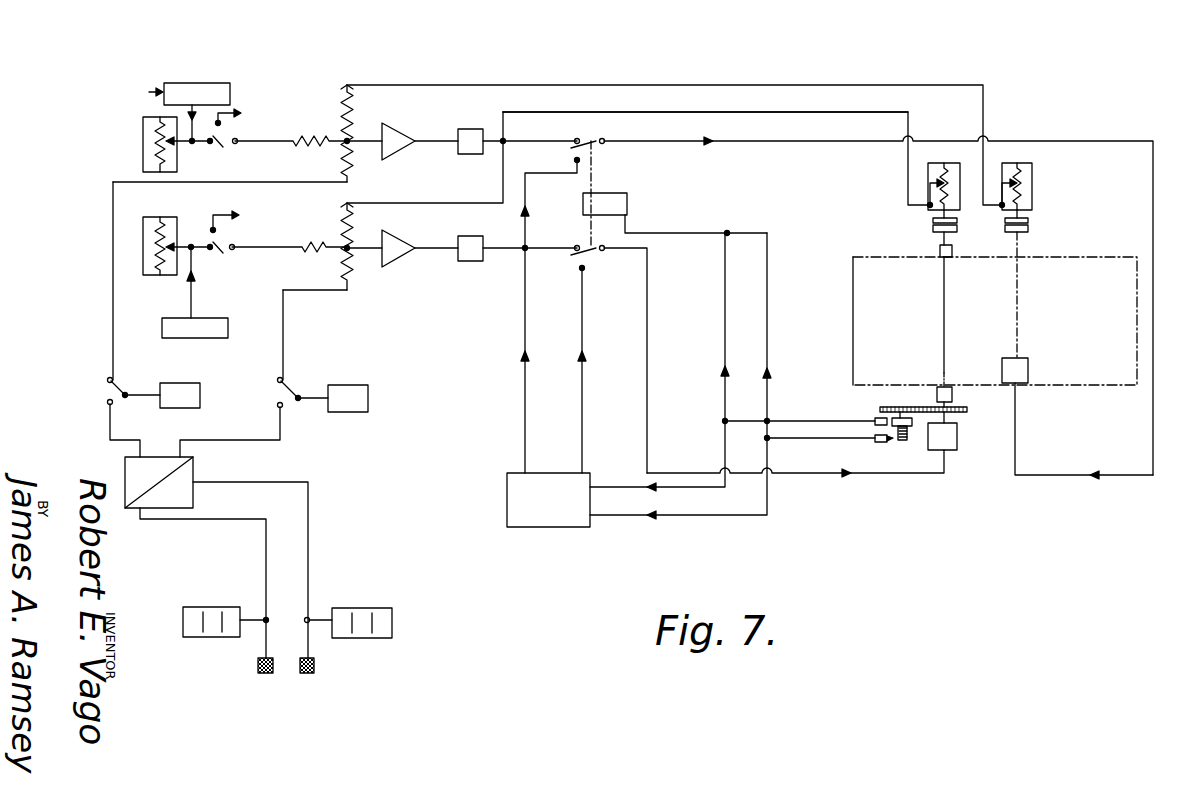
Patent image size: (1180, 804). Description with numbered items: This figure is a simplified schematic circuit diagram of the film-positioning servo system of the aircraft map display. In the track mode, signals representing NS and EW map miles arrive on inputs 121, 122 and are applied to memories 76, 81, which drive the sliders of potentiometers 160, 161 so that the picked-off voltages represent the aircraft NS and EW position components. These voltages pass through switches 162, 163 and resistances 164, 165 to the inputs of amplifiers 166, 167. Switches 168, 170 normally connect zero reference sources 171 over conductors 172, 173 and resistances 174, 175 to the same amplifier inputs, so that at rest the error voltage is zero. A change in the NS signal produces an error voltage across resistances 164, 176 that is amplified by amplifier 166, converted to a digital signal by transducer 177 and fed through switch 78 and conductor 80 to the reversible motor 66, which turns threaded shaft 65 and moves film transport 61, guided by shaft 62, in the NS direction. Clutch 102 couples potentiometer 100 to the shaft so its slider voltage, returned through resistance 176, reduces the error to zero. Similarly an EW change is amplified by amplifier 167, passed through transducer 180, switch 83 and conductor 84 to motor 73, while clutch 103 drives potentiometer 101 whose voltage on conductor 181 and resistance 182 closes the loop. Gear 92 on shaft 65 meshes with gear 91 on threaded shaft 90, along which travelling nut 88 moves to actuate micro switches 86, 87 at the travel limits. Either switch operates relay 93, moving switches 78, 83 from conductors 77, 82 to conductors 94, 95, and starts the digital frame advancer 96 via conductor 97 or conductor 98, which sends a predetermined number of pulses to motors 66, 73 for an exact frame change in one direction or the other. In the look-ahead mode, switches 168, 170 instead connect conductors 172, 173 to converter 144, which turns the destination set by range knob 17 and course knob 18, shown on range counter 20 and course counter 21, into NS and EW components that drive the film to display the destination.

The range knob 17 is at (258, 663).
The course knob 18 is at (315, 663).
The range counter 20 is at (215, 637).
The course counter 21 is at (392, 623).
The film transport 61 is at (1093, 308).
The shaft 62 is at (1020, 240).
The threaded shaft 65 is at (940, 250).
The reversible motor 66 is at (957, 433).
The motor 73 is at (1028, 365).
The memory 76 is at (228, 323).
The conductor 77 is at (542, 246).
The switch 78 is at (592, 255).
The conductor 80 is at (832, 475).
The memory 81 is at (230, 88).
The conductor 82 is at (550, 134).
The switch 83 is at (592, 147).
The conductor 84 is at (1062, 475).
The micro switch 86 is at (875, 419).
The micro switch 87 is at (880, 443).
The travelling nut 88 is at (912, 427).
The threaded shaft 90 is at (900, 440).
The gear 91 is at (903, 407).
The gear 92 is at (972, 398).
The relay 93 is at (627, 201).
The conductor 94 is at (582, 330).
The conductor 95 is at (558, 175).
The digital frame advancer 96 is at (562, 527).
The conductor 97 is at (700, 487).
The conductor 98 is at (730, 517).
The potentiometer 100 is at (968, 155).
The potentiometer 101 is at (1032, 170).
The clutch 102 is at (933, 222).
The clutch 103 is at (1028, 222).
The NS map miles signal input 121 is at (192, 338).
The EW map miles signal input 122 is at (147, 97).
The converter 144 is at (193, 470).
The potentiometer 160 is at (160, 217).
The potentiometer 161 is at (143, 141).
The switch 162 is at (223, 253).
The switch 163 is at (223, 147).
The resistance 164 is at (312, 252).
The resistance 165 is at (314, 147).
The amplifier 166 is at (398, 260).
The amplifier 167 is at (401, 131).
The switch 168 is at (305, 378).
The switch 170 is at (108, 393).
The reference source 171 is at (200, 395).
The conductor 172 is at (283, 322).
The conductor 173 is at (112, 307).
The resistance 174 is at (352, 273).
The resistance 175 is at (354, 168).
The resistance 176 is at (352, 213).
The transducer 177 is at (460, 262).
The transducer 180 is at (470, 154).
The conductor 181 is at (512, 89).
The resistance 182 is at (352, 106).